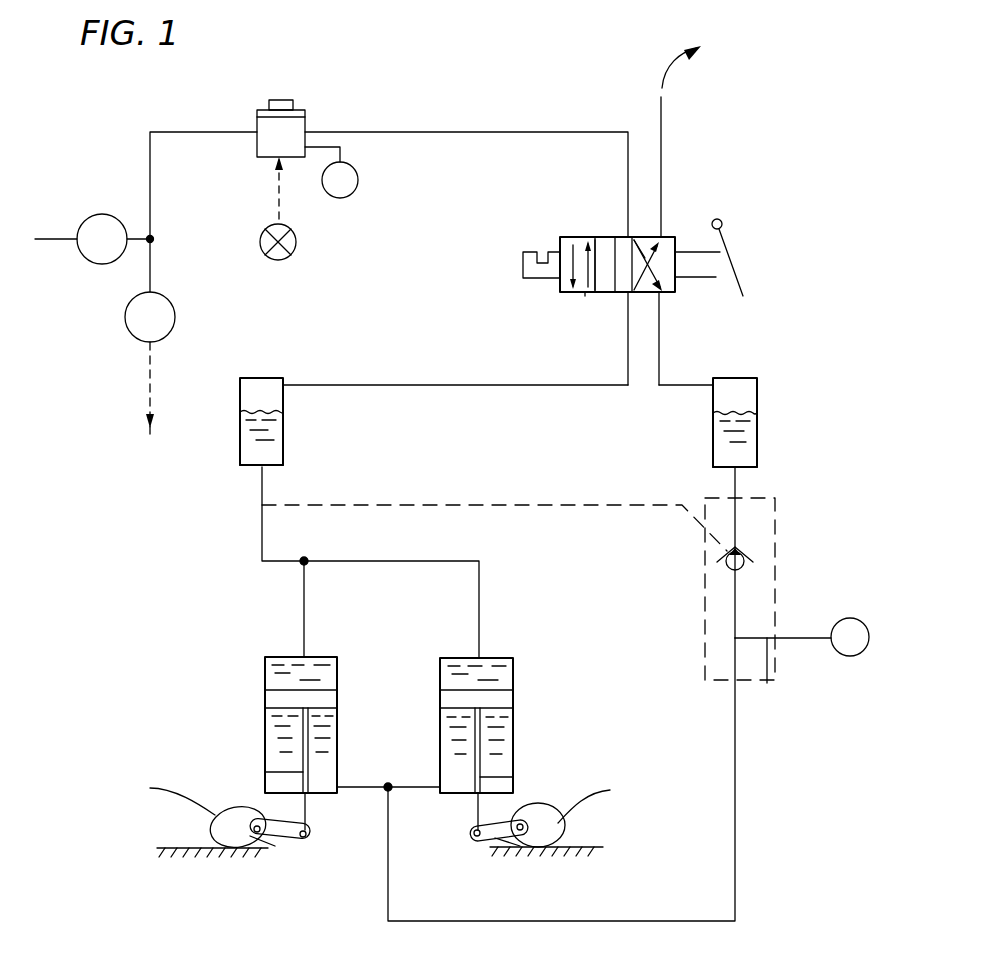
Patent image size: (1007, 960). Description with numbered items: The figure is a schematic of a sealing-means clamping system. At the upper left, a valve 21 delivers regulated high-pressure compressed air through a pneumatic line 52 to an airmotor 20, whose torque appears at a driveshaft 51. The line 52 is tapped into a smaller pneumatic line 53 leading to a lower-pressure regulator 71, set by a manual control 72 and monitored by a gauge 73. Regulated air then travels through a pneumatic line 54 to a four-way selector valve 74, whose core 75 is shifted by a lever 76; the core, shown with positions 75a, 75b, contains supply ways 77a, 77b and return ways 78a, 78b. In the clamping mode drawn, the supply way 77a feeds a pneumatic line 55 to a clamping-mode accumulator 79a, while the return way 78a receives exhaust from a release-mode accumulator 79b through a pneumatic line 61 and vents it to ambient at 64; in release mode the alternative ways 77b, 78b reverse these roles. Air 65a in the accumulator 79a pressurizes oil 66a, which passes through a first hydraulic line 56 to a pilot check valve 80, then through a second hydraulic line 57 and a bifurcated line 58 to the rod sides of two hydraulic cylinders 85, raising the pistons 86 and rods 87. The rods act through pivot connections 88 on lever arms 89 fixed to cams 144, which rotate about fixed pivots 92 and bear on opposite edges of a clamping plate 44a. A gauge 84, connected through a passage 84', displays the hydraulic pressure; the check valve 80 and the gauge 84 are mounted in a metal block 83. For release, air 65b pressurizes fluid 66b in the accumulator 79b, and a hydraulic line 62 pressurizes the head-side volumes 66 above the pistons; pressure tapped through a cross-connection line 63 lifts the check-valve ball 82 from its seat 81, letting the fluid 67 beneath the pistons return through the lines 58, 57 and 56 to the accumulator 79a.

The airmotor 20 is at (135, 338).
The valve 21 is at (88, 218).
The driveshaft 51 is at (148, 422).
The pneumatic line 52 is at (150, 250).
The pneumatic line 53 is at (150, 175).
The pneumatic line 54 is at (470, 131).
The pneumatic line 55 is at (668, 390).
The first hydraulic line 56 is at (735, 485).
The second hydraulic line 57 is at (388, 912).
The bifurcated hydraulic line 58 is at (408, 785).
The pneumatic line 61 is at (490, 385).
The hydraulic line 62 is at (262, 544).
The cross-connection hydraulic line 63 is at (500, 504).
The ambient vent 64 is at (668, 76).
The air 65a is at (745, 390).
The air 65b is at (265, 385).
The maximum volumes above the pistons 66 is at (318, 657).
The hydraulic fluid 66a is at (745, 455).
The hydraulic fluid 66b is at (270, 455).
The hydraulic fluid 67 is at (322, 788).
The lower-pressure regulator 71 is at (305, 118).
The manual control 72 is at (282, 224).
The gauge 73 is at (358, 178).
The four-way selector valve 74 is at (508, 289).
The core 75 is at (614, 306).
The core position 75a is at (668, 292).
The core position 75b is at (584, 293).
The lever 76 is at (730, 238).
The supply way 77a is at (640, 244).
The alternative supply way 77b is at (561, 243).
The return way 78a is at (672, 246).
The alternative return way 78b is at (584, 255).
The clamping-mode accumulator 79a is at (757, 430).
The release-mode accumulator 79b is at (285, 424).
The check valve 80 is at (711, 589).
The seat 81 is at (740, 547).
The check-valve core 82 is at (745, 565).
The metal block 83 is at (705, 602).
The gauge 84 is at (805, 610).
The line to pressure gauge 84' is at (784, 689).
The hydraulic cylinders 85 is at (265, 665).
The pistons 86 is at (268, 703).
The rods 87 is at (268, 772).
The pivot connections 88 is at (305, 845).
The lever arms 89 is at (282, 848).
The fixed pivots 92 is at (240, 818).
The cams 144 is at (369, 797).
The clamping plate 44a is at (180, 848).